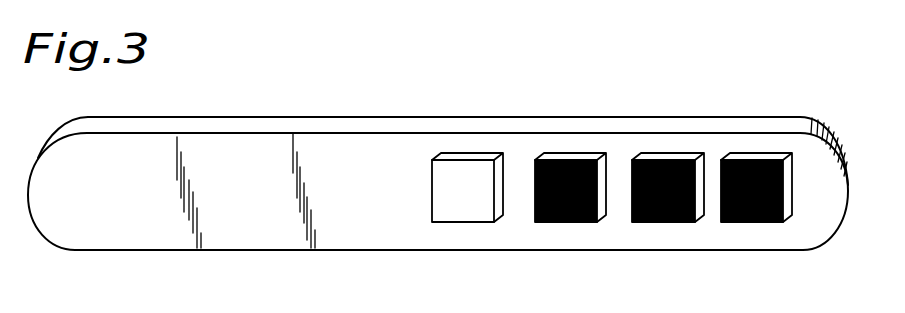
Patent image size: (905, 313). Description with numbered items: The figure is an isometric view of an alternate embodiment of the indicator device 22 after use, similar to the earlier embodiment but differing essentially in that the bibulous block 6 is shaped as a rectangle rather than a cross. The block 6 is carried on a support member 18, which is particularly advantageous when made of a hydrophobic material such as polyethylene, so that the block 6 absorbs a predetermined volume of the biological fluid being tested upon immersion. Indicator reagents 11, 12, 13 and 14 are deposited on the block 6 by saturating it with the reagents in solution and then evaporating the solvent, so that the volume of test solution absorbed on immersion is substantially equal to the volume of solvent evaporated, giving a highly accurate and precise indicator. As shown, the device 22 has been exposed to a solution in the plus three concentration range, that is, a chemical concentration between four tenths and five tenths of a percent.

The device 22 is at (440, 93).
The support member 18 is at (222, 122).
The indicator reagent 14 is at (492, 221).
The indicator reagent 13 is at (604, 213).
The indicator reagent 12 is at (695, 216).
The indicator reagent 11 is at (782, 217).
The bibulous block 6 is at (720, 168).